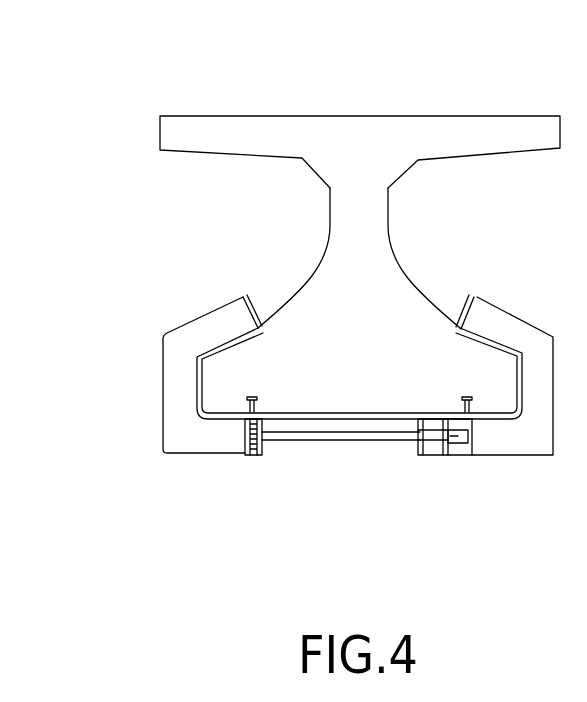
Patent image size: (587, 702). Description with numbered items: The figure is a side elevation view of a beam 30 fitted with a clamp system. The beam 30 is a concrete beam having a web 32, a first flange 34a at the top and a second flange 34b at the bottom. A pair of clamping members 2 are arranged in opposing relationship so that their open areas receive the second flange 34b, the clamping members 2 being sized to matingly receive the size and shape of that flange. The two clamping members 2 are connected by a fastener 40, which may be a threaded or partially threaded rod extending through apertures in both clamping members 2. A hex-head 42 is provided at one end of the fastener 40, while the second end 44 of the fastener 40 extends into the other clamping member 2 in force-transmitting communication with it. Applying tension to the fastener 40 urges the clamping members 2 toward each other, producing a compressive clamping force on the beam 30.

The beam 30 is at (294, 218).
The web 32 is at (332, 204).
The first flange 34a is at (166, 134).
The second flange 34b is at (252, 377).
The clamping member 2 is at (172, 437).
The fastener 40 is at (372, 455).
The hex-head 42 is at (243, 466).
The second end 44 is at (467, 463).